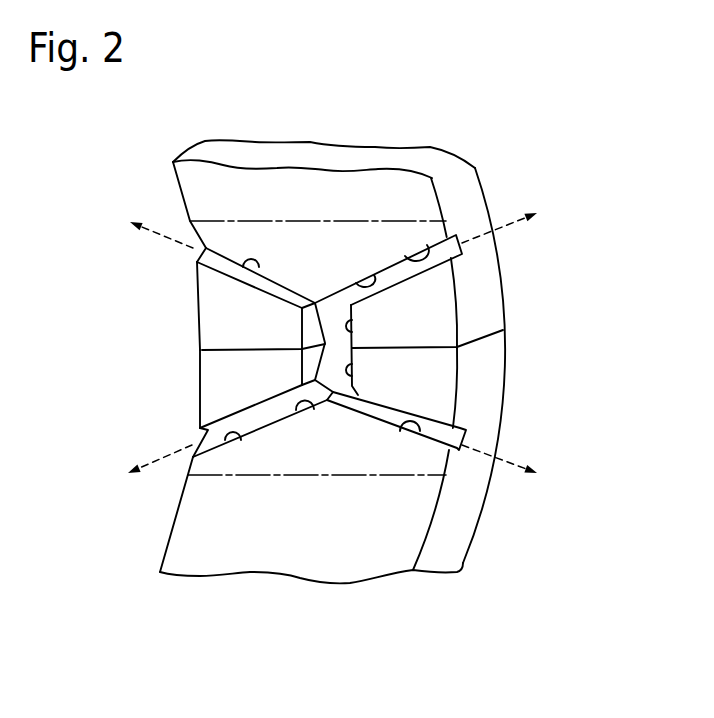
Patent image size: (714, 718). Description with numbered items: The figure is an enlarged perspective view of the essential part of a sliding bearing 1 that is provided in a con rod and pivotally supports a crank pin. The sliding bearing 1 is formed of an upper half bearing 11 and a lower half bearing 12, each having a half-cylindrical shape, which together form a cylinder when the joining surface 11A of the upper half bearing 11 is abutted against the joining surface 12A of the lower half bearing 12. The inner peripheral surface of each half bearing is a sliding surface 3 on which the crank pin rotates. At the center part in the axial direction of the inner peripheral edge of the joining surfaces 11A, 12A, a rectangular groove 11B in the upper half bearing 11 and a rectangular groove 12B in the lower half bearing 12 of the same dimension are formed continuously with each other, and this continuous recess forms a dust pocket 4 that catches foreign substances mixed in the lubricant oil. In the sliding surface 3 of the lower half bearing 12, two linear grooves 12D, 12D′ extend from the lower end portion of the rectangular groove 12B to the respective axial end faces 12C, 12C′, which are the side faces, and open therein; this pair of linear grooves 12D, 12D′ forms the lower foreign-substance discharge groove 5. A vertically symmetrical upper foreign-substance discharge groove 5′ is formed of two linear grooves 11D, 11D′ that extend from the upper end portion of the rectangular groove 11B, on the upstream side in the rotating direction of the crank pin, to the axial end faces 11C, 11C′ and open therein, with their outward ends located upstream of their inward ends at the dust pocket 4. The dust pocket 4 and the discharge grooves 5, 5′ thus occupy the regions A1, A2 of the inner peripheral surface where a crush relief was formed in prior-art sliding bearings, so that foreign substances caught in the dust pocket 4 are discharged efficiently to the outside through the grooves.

The sliding bearing 1 is at (576, 258).
The sliding surface 3 is at (292, 560).
The dust pocket 4 is at (333, 355).
The foreign-substance discharge groove 5 is at (312, 402).
The foreign-substance discharge groove 5′ is at (375, 268).
The upper half bearing 11 is at (468, 197).
The joining surface 11A is at (487, 338).
The rectangular groove 11B is at (353, 327).
The axial end face 11C is at (485, 277).
The axial end face 11C′ is at (200, 298).
The linear groove 11D is at (426, 250).
The linear groove 11D′ is at (250, 258).
The lower half bearing 12 is at (464, 540).
The joining surface 12A is at (472, 338).
The rectangular groove 12B is at (353, 373).
The end face 12C is at (467, 503).
The end face 12C′ is at (185, 520).
The linear groove 12D is at (417, 447).
The linear groove 12D′ is at (243, 443).
The region A1 is at (97, 222).
The region A2 is at (97, 353).